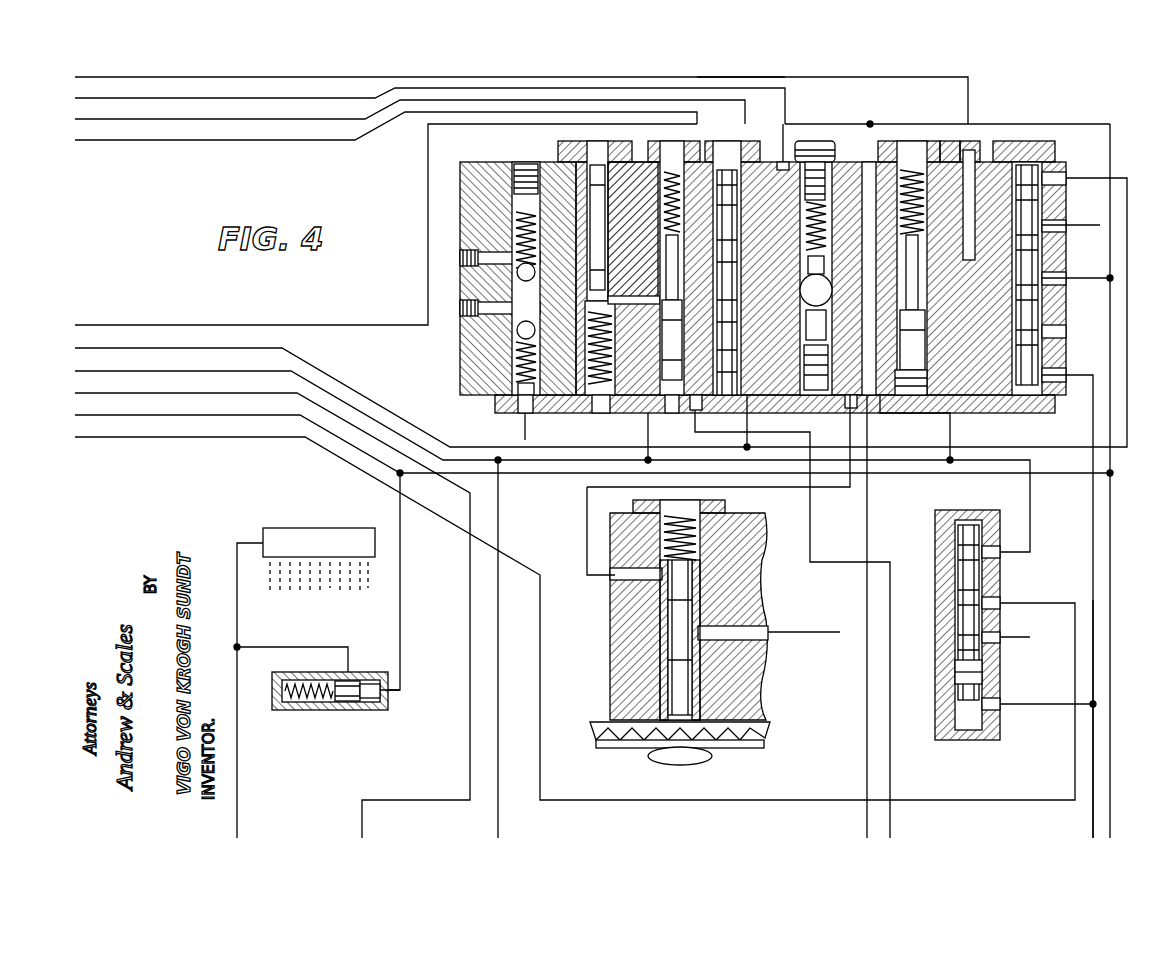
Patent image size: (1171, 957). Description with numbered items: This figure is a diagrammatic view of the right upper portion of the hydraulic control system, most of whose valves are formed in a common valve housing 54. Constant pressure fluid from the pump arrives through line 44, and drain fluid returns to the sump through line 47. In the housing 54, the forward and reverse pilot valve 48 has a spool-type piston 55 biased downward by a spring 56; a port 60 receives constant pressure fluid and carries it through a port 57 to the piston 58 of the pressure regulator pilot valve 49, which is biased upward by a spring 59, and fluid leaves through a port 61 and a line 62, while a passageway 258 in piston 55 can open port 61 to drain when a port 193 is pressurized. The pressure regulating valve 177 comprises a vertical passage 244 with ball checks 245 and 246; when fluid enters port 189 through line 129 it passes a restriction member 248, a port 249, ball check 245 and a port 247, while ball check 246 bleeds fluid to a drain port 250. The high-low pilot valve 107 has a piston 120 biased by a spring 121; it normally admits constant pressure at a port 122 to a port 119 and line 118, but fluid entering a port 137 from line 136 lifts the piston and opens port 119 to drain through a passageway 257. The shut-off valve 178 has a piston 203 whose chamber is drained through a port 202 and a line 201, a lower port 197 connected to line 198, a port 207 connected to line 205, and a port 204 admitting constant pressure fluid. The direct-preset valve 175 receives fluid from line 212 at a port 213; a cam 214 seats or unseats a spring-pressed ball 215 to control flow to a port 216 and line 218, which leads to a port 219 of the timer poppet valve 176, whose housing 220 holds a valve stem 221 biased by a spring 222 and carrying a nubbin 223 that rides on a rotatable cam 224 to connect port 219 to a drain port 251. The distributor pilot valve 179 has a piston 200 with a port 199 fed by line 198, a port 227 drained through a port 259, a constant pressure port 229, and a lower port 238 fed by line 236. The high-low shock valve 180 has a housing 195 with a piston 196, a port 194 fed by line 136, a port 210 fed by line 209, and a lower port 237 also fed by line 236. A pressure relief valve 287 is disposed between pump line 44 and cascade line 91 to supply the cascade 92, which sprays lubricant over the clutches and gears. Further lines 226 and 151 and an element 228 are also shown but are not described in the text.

The supply line 226 is at (88, 80).
The line 212 is at (88, 101).
The line 201 is at (88, 122).
The line 205 is at (88, 143).
The shut-off valve 178 is at (726, 67).
The direct-preset valve 175 is at (821, 112).
The high-low pilot valve 107 is at (912, 112).
The distributor pilot valve 179 is at (1029, 112).
The line 129 is at (88, 328).
The line 198 is at (88, 351).
The line 136 is at (88, 374).
The line 151 is at (88, 396).
The line 44 is at (88, 418).
The line 209 is at (88, 440).
The valve housing 54 is at (460, 374).
The passage 244 is at (530, 290).
The pressure regulating valve 177 is at (529, 151).
The restriction member 248 is at (539, 178).
The port 247 is at (540, 240).
The ball check 245 is at (516, 280).
The ball check 246 is at (516, 330).
The port 249 is at (537, 333).
The spring 59 is at (540, 377).
The port 189 is at (626, 146).
The spool-type piston 58 is at (584, 347).
The port 57 is at (648, 271).
The passageway 258 is at (660, 297).
The port 60 is at (654, 160).
The port 207 is at (694, 160).
The spring 56 is at (688, 228).
The spool-type piston 55 is at (661, 345).
The port 202 is at (748, 160).
The valve piston 203 is at (745, 280).
The port 204 is at (786, 150).
The port 213 is at (797, 160).
The spring-pressed ball 215 is at (826, 210).
The cam 214 is at (803, 296).
The port 122 is at (864, 162).
The spring 121 is at (920, 198).
The passageway 257 is at (918, 278).
The piston 120 is at (926, 330).
The plate 228 is at (955, 160).
The port 227 is at (970, 150).
The port 199 is at (1066, 178).
The port 259 is at (1066, 224).
The port 229 is at (1066, 277).
The valve piston 200 is at (1042, 300).
The port 238 is at (1066, 374).
The line 236 is at (1091, 828).
The port 250 is at (522, 422).
The pressure regulator pilot valve 49 is at (604, 425).
The port 193 is at (648, 420).
The forward and reverse pilot valve 48 is at (676, 425).
The port 61 is at (704, 412).
The port 197 is at (749, 420).
The line 62 is at (790, 430).
The port 216 is at (848, 398).
The port 119 is at (869, 418).
The line 118 is at (865, 828).
The port 137 is at (884, 405).
The line 47 is at (527, 430).
The cascade 92 is at (326, 528).
The line 91 is at (238, 826).
The pressure relief valve 287 is at (362, 714).
The timer poppet valve 176 is at (711, 580).
The housing 220 is at (762, 586).
The port 219 is at (612, 580).
The line 218 is at (762, 487).
The port 251 is at (762, 632).
The spring 222 is at (700, 533).
The nubbin 223 is at (660, 703).
The valve stem 221 is at (690, 700).
The rotatable cam 224 is at (770, 738).
The high-low shock valve 180 is at (997, 641).
The housing 195 is at (934, 588).
The port 194 is at (1000, 554).
The port 210 is at (1000, 600).
The piston 196 is at (1000, 672).
The port 237 is at (1000, 706).